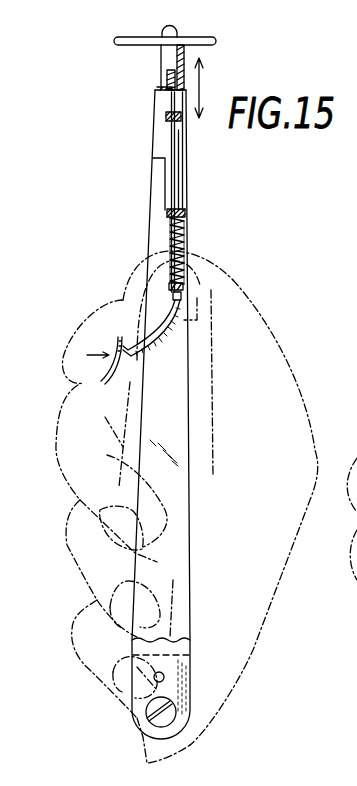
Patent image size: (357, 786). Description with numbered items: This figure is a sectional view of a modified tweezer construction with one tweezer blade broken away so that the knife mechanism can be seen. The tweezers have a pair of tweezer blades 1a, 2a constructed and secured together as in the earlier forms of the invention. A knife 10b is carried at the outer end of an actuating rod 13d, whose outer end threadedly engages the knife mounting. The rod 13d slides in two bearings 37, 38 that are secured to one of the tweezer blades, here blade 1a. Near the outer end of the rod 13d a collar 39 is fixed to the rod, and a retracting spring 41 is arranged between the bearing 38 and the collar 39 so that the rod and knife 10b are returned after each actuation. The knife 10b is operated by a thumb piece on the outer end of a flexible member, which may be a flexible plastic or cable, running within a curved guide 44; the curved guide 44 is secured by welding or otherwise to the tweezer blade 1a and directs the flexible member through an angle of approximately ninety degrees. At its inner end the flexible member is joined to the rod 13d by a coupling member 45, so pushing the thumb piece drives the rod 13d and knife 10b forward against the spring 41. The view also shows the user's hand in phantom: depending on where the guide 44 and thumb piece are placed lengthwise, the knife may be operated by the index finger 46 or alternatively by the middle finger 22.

The knife 10b is at (181, 51).
The tweezer blade 1a is at (180, 393).
The actuating rod 13d is at (183, 143).
The bearing 37 is at (167, 116).
The bearing 38 is at (167, 213).
The retracting spring 41 is at (186, 238).
The collar 39 is at (183, 291).
The coupling member 45 is at (183, 296).
The curved guide 44 is at (164, 348).
The index finger 46 is at (80, 371).
The tweezer blade 2a is at (190, 642).
The middle finger 22 is at (62, 468).